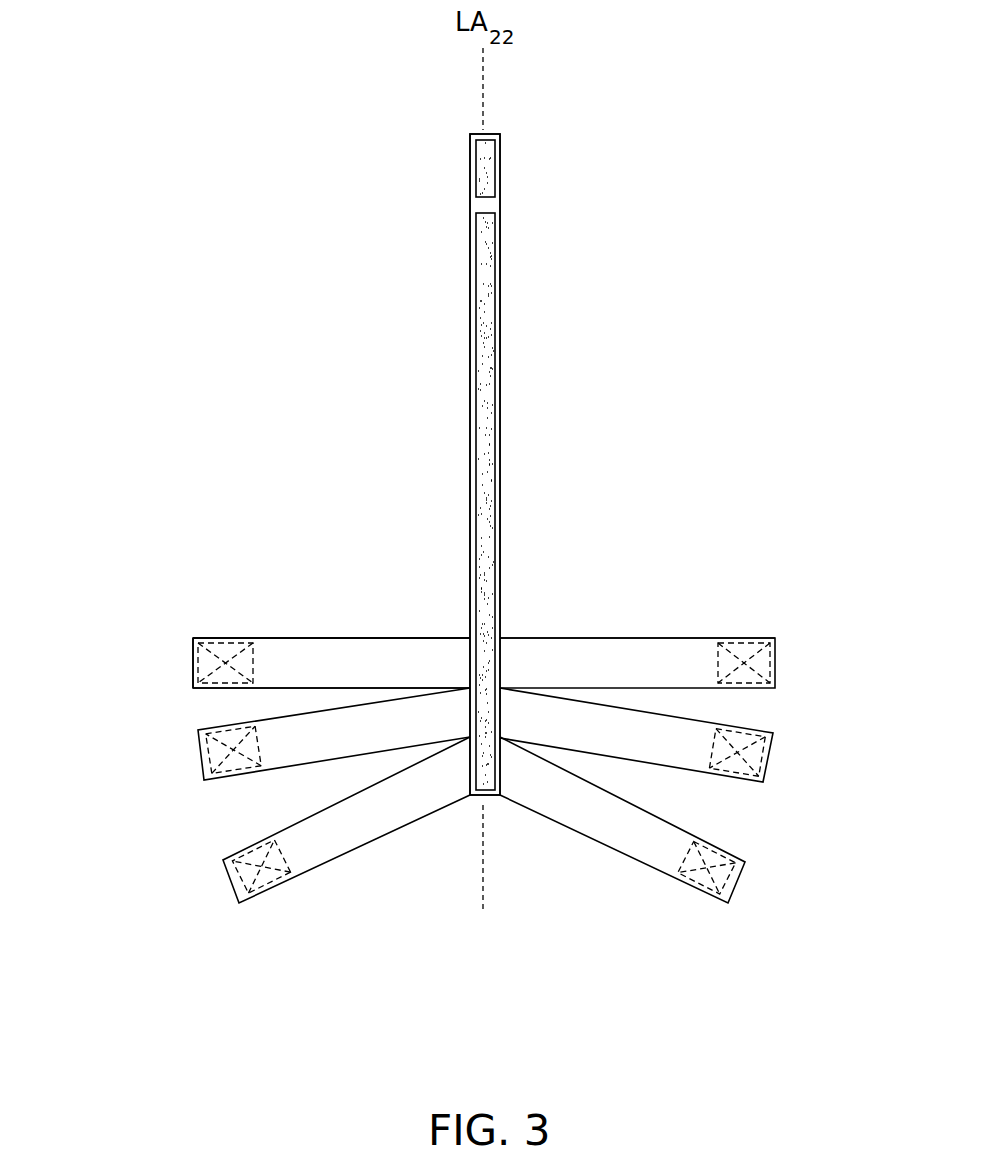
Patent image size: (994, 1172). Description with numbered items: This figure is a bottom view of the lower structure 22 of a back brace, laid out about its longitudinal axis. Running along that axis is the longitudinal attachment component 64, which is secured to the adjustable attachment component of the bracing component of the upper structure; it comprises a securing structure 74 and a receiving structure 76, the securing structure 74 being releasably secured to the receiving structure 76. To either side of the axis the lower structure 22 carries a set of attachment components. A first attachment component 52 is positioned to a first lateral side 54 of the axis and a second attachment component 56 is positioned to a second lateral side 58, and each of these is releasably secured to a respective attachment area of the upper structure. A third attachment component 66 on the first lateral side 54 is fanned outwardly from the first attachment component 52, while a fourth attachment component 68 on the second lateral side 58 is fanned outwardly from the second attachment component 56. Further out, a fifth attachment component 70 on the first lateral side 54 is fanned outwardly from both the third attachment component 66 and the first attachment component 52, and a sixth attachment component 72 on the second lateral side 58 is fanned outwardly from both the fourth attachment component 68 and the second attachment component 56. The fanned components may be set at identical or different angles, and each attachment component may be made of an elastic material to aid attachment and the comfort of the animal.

The lower structure 22 is at (618, 517).
The first attachment component 52 is at (682, 638).
The first lateral side 54 is at (798, 663).
The second attachment component 56 is at (397, 638).
The second lateral side 58 is at (151, 658).
The longitudinal attachment component 64 is at (500, 318).
The third attachment component 66 is at (750, 753).
The fourth attachment component 68 is at (201, 762).
The fifth attachment component 70 is at (733, 887).
The sixth attachment component 72 is at (237, 887).
The securing structure 74 is at (485, 170).
The receiving structure 76 is at (446, 366).